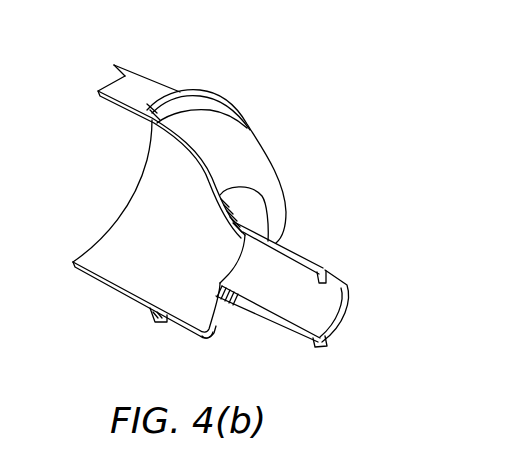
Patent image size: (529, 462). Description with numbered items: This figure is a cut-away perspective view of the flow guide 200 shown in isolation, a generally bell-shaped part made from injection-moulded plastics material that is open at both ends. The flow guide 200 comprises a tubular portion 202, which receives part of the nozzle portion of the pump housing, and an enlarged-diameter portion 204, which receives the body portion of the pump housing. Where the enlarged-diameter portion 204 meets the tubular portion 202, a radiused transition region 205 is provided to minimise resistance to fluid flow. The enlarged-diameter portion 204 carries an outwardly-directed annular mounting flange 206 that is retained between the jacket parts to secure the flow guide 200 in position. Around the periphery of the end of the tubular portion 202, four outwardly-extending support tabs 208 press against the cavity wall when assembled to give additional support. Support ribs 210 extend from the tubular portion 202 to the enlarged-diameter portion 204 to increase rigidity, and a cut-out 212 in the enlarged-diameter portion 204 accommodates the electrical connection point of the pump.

The flow guide 200 is at (68, 65).
The tubular portion 202 is at (300, 253).
The enlarged-diameter portion 204 is at (148, 78).
The radiused transition region 205 is at (208, 334).
The mounting flange 206 is at (148, 327).
The support tabs 208 is at (327, 343).
The support ribs 210 is at (236, 309).
The cut-out 212 is at (107, 76).